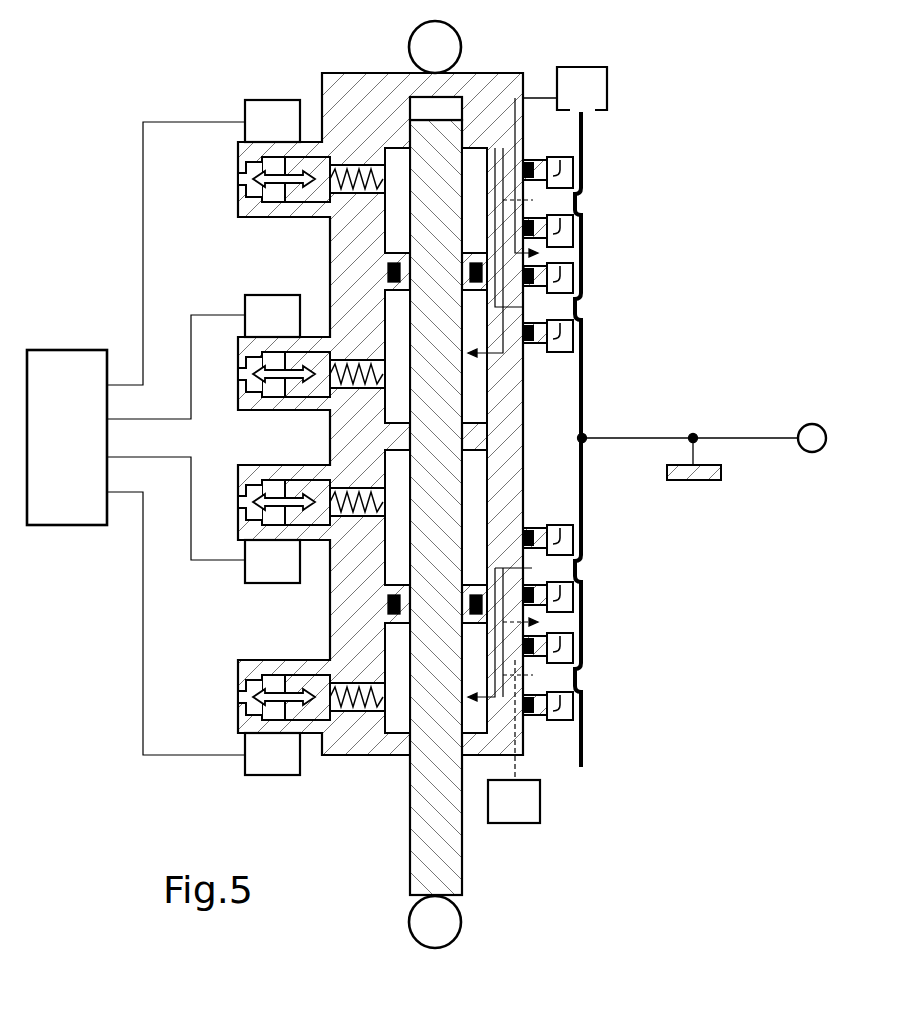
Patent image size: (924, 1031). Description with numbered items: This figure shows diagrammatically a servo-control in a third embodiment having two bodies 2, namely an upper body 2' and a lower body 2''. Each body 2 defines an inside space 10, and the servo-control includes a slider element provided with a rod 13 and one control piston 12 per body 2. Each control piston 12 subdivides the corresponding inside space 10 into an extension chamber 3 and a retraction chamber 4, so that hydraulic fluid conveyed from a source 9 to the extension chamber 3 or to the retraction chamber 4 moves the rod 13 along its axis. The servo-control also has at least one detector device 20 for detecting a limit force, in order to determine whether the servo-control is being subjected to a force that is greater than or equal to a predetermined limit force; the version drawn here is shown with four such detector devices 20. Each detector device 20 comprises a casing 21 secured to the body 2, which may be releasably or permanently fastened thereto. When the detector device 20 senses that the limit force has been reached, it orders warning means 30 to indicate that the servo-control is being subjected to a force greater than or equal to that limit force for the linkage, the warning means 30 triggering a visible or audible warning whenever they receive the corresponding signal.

The body 2 is at (606, 439).
The upper body 2' is at (506, 187).
The lower body 2'' is at (543, 687).
The extension chamber 3 is at (403, 163).
The retraction chamber 4 is at (475, 400).
The source 9 is at (607, 92).
The inside space 10 is at (470, 158).
The control piston 12 is at (470, 291).
The rod 13 is at (462, 851).
The detector device 20 is at (236, 179).
The casing 21 is at (355, 90).
The warning means 30 is at (47, 527).